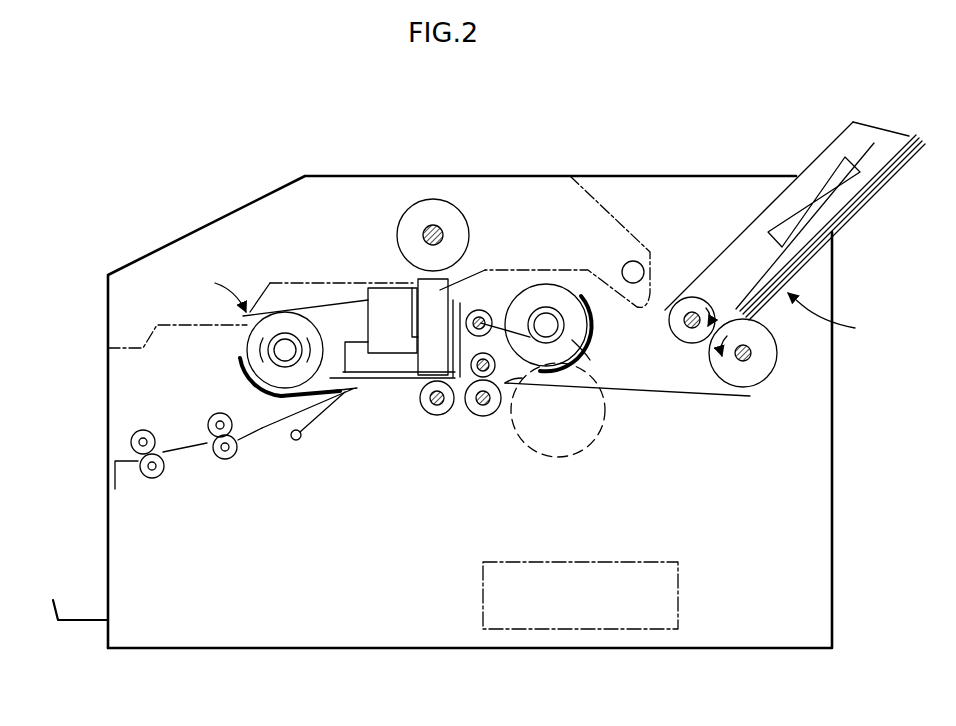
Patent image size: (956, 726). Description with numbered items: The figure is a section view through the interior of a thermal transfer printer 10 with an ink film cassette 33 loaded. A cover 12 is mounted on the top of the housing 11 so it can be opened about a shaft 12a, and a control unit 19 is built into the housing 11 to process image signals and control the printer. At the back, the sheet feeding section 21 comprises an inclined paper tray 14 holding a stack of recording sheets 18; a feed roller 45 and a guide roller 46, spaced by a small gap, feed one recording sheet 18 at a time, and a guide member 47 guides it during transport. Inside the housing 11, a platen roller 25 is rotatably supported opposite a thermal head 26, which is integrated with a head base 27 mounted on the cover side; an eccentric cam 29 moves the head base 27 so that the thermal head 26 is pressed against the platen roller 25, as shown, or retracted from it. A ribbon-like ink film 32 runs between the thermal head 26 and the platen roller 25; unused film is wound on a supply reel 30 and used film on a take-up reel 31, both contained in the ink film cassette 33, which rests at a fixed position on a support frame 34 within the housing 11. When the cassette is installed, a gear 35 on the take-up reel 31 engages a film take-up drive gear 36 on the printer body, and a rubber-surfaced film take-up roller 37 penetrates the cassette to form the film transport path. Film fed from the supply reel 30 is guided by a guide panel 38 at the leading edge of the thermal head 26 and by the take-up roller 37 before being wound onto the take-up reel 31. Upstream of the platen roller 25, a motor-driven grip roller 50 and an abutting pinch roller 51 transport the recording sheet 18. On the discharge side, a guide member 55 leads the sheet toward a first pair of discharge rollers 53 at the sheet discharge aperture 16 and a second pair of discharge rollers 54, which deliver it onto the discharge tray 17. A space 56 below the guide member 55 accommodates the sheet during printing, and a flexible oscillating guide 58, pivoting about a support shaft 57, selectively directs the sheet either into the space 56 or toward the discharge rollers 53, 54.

The thermal transfer printer 10 is at (174, 106).
The housing 11 is at (835, 506).
The cover 12 is at (281, 187).
The shaft 12a is at (636, 262).
The paper tray 14 is at (871, 195).
The sheet discharge aperture 16 is at (108, 452).
The discharge tray 17 is at (84, 622).
The recording sheet 18 is at (874, 152).
The control unit 19 is at (678, 615).
The sheet feeding section 21 is at (840, 318).
The platen roller 25 is at (441, 416).
The thermal head 26 is at (428, 368).
The head base 27 is at (442, 300).
The eccentric cam 29 is at (441, 222).
The supply reel 30 is at (289, 340).
The take-up reel 31 is at (547, 318).
The ink film 32 is at (328, 387).
The ink film cassette 33 is at (219, 281).
The support frame 34 is at (240, 362).
The gear 35 is at (588, 352).
The film take-up drive gear 36 is at (603, 430).
The film take-up roller 37 is at (481, 320).
The guide panel 38 is at (440, 362).
The feed roller 45 is at (757, 377).
The guide roller 46 is at (694, 297).
The guide member 47 is at (663, 386).
The grip roller 50 is at (492, 410).
The pinch roller 51 is at (478, 376).
The first pair of discharge rollers 53 is at (140, 480).
The second pair of discharge rollers 54 is at (238, 451).
The guide member 55 is at (250, 412).
The space 56 is at (380, 536).
The support shaft 57 is at (333, 442).
The oscillating guide 58 is at (342, 405).